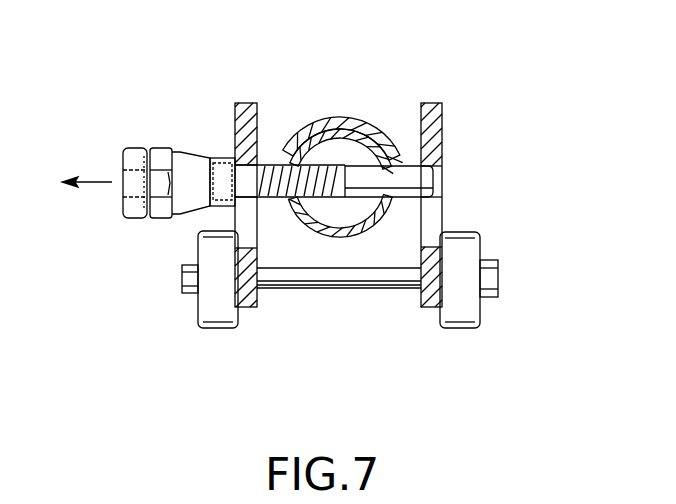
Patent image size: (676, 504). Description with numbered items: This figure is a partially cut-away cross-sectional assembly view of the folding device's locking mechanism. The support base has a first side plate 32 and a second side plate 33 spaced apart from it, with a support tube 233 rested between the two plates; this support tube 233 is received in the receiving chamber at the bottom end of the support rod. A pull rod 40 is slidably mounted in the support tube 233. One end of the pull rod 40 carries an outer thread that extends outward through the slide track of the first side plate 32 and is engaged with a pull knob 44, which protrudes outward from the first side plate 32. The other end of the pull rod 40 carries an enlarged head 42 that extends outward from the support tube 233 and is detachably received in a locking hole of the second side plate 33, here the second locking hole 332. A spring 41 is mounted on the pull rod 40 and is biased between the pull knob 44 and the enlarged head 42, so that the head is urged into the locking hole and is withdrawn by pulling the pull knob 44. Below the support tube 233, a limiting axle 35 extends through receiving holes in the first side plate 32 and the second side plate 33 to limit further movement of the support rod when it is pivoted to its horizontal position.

The first side plate 32 is at (238, 102).
The second side plate 33 is at (443, 117).
The second locking hole 332 is at (438, 172).
The pull knob 44 is at (178, 149).
The pull rod 40 is at (288, 164).
The enlarged head 42 is at (432, 188).
The support tube 233 is at (362, 235).
The spring 41 is at (318, 131).
The limiting axle 35 is at (330, 289).